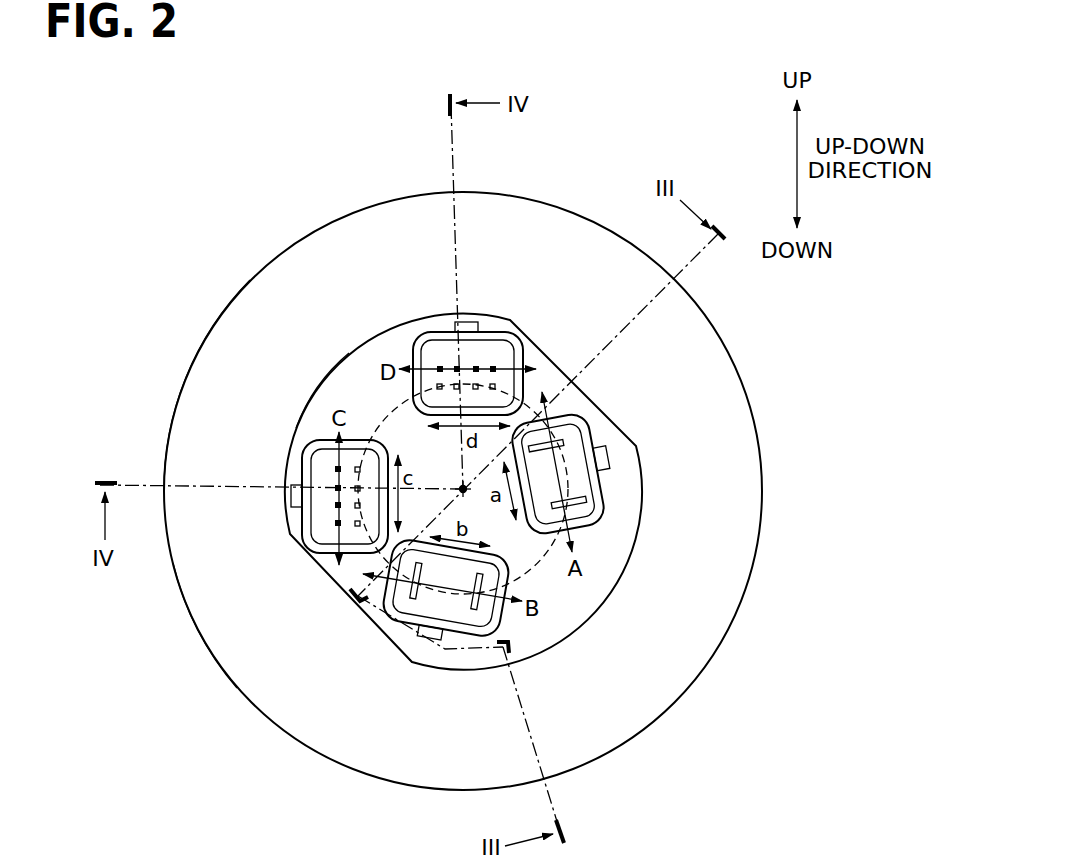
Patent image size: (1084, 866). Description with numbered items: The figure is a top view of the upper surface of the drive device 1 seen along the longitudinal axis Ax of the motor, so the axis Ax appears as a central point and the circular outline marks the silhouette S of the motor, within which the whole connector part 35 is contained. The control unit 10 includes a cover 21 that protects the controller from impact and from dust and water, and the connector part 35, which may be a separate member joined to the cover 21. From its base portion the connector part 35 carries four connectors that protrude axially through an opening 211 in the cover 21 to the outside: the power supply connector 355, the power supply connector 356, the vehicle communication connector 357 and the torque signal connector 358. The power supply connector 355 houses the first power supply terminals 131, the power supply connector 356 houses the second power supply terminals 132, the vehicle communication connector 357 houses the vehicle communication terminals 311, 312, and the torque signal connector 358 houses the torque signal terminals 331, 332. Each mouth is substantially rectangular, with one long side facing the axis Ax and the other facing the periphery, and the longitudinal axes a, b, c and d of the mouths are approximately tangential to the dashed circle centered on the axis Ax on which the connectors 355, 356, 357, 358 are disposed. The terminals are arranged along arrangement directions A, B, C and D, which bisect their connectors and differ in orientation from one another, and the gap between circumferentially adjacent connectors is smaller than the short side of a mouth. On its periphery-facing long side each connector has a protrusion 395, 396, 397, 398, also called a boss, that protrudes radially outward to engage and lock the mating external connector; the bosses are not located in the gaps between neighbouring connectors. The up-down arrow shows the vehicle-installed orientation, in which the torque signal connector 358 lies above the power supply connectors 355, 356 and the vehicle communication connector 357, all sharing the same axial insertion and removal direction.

The drive device 1 is at (460, 487).
The control unit 10 is at (271, 257).
The cover 21 is at (330, 235).
The opening 211 is at (328, 372).
The connector part 35 is at (598, 588).
The first power supply terminal 131 is at (590, 436).
The second power supply terminal 132 is at (412, 598).
The vehicle communication terminal 311 is at (322, 552).
The vehicle communication terminal 312 is at (327, 447).
The torque signal terminal 331 is at (522, 350).
The torque signal terminal 332 is at (436, 384).
The power supply connector 355 is at (578, 510).
The power supply connector 356 is at (500, 613).
The vehicle communication connector 357 is at (338, 469).
The torque signal connector 358 is at (495, 366).
The protrusion 395 is at (605, 467).
The protrusion 396 is at (438, 634).
The protrusion 397 is at (289, 493).
The protrusion 398 is at (467, 322).
The axis Ax is at (468, 494).
The silhouette S is at (233, 690).